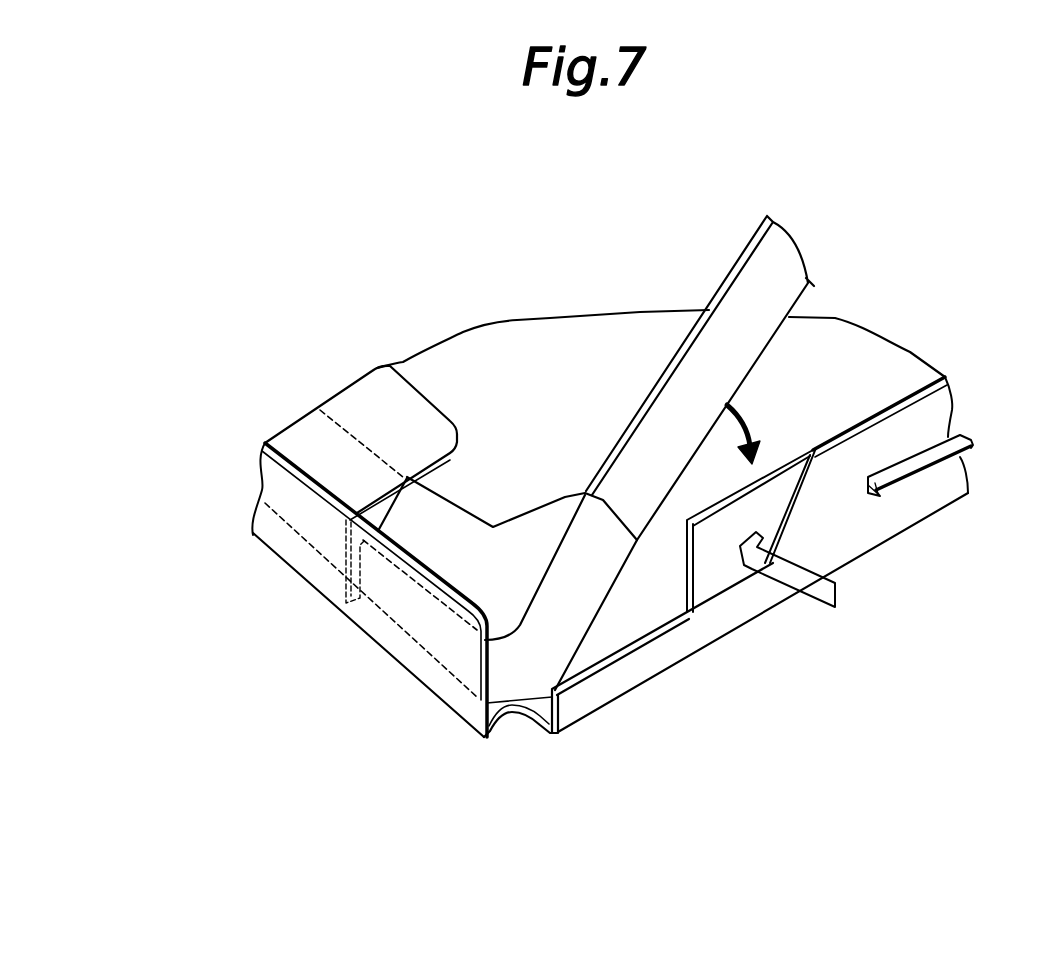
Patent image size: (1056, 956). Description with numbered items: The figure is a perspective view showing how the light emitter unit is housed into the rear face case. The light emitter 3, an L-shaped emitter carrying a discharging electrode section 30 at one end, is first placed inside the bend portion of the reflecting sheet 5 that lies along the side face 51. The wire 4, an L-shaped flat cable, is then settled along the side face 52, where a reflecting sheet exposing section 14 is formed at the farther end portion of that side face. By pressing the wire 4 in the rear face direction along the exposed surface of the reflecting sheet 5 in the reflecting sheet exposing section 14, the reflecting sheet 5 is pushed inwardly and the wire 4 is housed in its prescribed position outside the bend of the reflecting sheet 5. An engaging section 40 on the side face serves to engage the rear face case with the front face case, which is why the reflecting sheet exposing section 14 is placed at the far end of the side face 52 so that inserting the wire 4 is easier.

The light emitter 3 is at (317, 437).
The wire 4 is at (745, 310).
The reflecting sheet 5 is at (398, 408).
The reflecting sheet exposing section 14 is at (647, 583).
The discharging electrode section 30 is at (468, 550).
The engaging section 40 is at (923, 460).
The side face 51 is at (293, 543).
The side face 52 is at (858, 540).